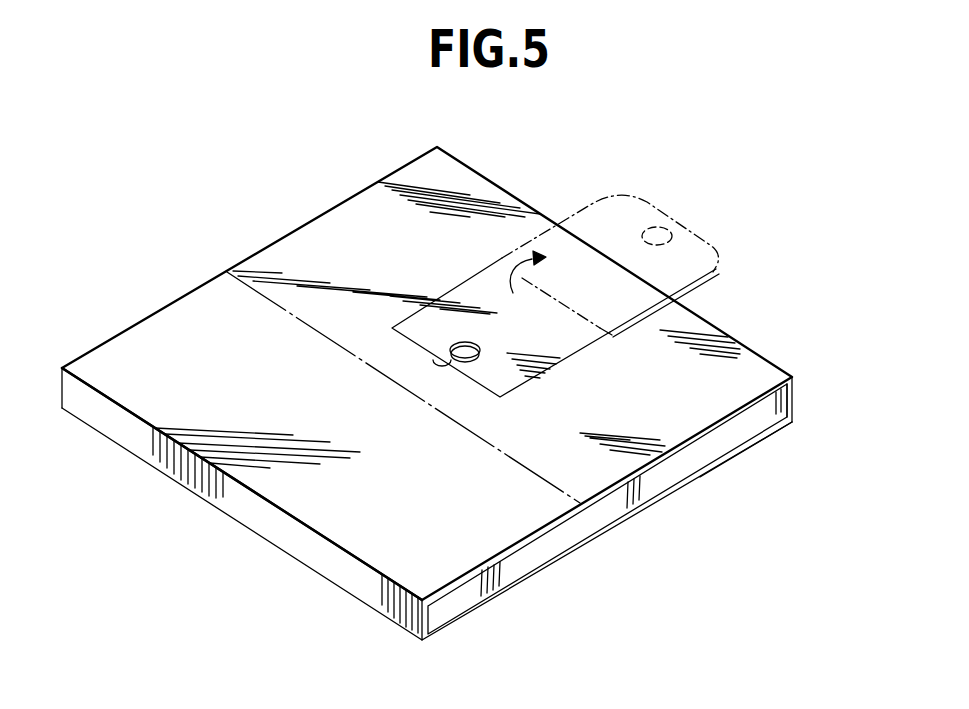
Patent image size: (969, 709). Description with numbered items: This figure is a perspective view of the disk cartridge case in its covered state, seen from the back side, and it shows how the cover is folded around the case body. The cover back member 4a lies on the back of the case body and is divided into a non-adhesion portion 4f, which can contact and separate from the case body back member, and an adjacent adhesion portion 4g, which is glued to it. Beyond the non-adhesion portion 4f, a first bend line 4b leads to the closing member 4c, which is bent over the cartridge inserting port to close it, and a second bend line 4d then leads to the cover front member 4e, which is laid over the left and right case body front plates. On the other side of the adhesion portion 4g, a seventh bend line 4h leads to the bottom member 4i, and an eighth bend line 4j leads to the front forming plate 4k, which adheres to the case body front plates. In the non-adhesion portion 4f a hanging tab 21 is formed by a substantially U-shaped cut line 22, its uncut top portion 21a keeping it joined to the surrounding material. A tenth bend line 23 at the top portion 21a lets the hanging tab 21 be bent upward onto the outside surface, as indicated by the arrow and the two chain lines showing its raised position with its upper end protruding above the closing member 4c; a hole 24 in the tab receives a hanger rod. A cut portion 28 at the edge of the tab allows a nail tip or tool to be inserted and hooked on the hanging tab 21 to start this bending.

The cover back member 4a is at (240, 172).
The first bend line 4b is at (747, 345).
The closing member 4c is at (795, 400).
The second bend line 4d is at (795, 420).
The cover front member 4e is at (767, 437).
The non-adhesion portion 4f is at (263, 258).
The adhesion portion 4g is at (192, 303).
The seventh bend line 4h is at (110, 397).
The bottom member 4i is at (60, 397).
The eighth bend line 4j is at (100, 438).
The front forming plate 4k is at (500, 600).
The hanging tab 21 is at (623, 207).
The top portion 21a is at (542, 243).
The cut line 22 is at (547, 333).
The tenth bend line 23 is at (688, 438).
The hole 24 is at (668, 220).
The cut portion 28 is at (440, 368).